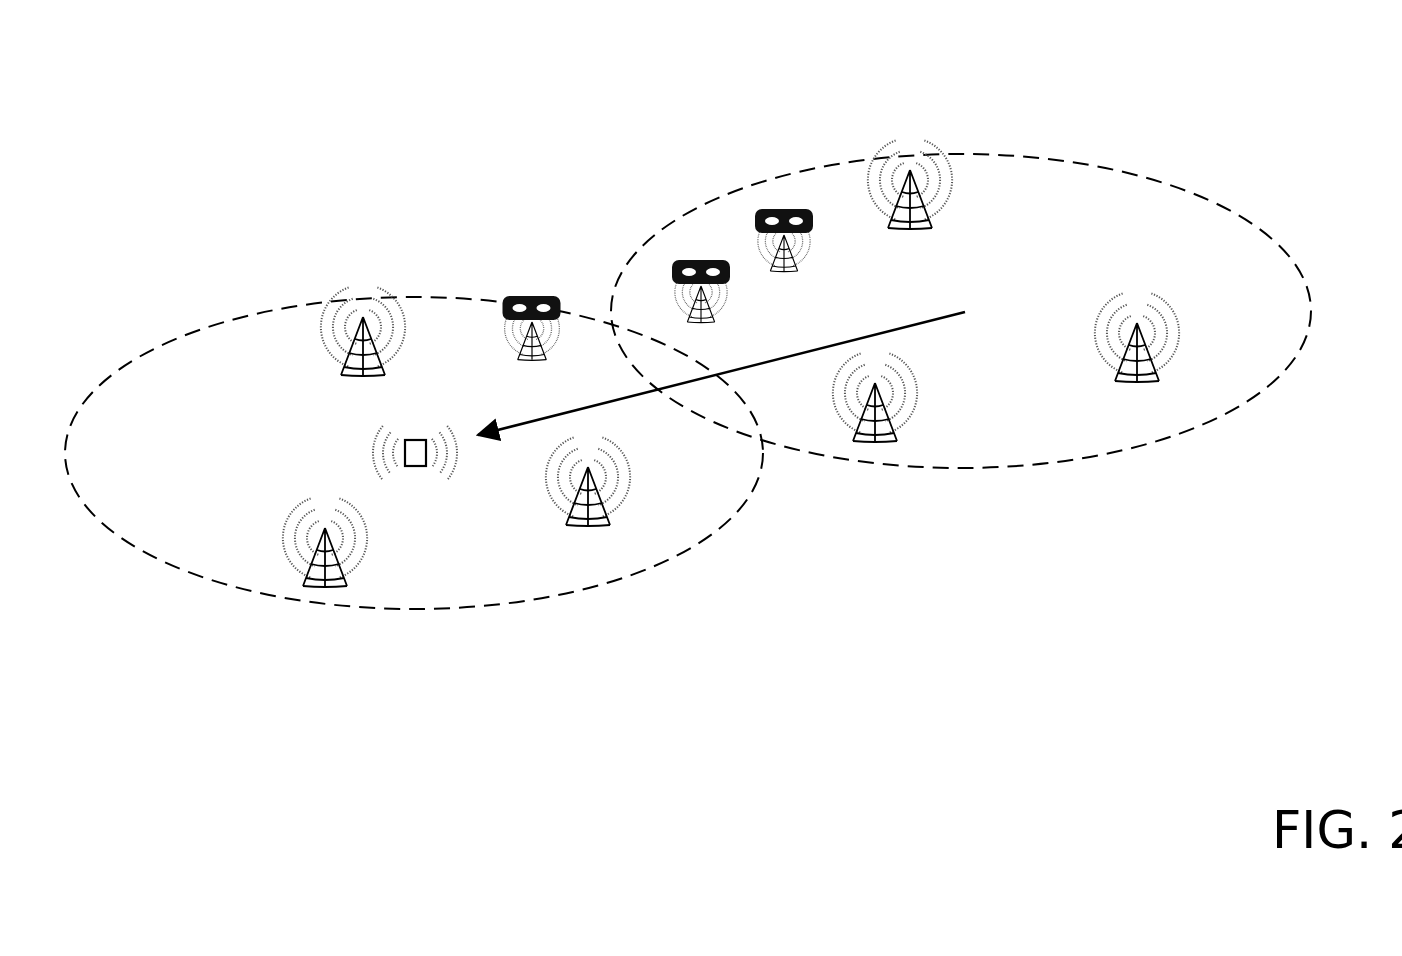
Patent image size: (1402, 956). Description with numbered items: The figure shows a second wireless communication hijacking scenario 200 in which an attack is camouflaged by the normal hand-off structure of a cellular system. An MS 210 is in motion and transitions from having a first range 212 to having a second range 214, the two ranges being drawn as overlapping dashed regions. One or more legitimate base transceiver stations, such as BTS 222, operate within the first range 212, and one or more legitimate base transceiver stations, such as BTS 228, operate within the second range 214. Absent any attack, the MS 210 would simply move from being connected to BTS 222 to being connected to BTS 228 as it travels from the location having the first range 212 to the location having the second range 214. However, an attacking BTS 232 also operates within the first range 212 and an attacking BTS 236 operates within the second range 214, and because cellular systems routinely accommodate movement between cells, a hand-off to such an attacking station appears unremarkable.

The second wireless communication hijacking scenario 200 is at (174, 87).
The MS 210 is at (412, 490).
The first range 212 is at (990, 135).
The second range 214 is at (195, 318).
The BTS 222 is at (888, 448).
The BTS 228 is at (602, 530).
The attacking BTS 232 is at (662, 298).
The attacking BTS 236 is at (497, 337).